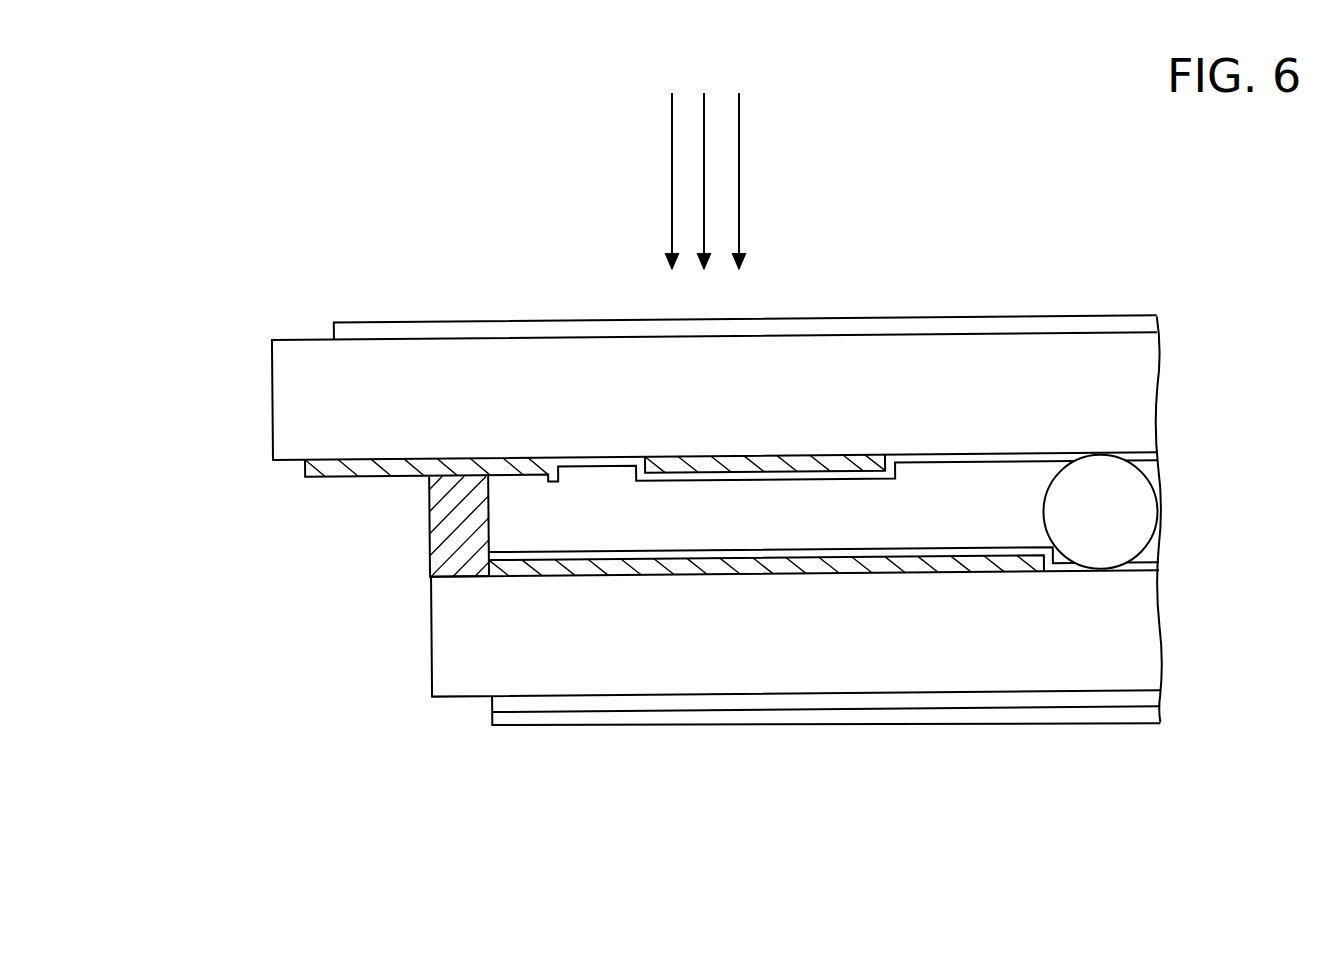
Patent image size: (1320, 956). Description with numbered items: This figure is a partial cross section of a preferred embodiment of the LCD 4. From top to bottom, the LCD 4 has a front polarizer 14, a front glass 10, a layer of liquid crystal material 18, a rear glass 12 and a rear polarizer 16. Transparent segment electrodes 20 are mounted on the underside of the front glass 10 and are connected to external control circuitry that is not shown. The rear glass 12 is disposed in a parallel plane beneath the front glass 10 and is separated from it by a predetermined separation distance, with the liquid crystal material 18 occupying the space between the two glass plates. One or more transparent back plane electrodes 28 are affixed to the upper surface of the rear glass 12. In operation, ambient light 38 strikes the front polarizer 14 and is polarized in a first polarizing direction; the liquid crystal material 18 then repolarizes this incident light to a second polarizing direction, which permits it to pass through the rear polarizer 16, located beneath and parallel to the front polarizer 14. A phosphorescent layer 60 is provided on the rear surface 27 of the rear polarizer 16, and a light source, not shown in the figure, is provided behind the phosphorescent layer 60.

The LCD 4 is at (325, 225).
The front glass 10 is at (1030, 352).
The rear glass 12 is at (722, 678).
The front polarizer 14 is at (860, 317).
The rear polarizer 16 is at (1017, 699).
The liquid crystal material 18 is at (598, 504).
The transparent segment electrodes 20 is at (832, 455).
The rear surface 27 is at (563, 712).
The transparent back plane electrodes 28 is at (532, 575).
The ambient light 38 is at (739, 162).
The phosphorescent layer 60 is at (818, 717).